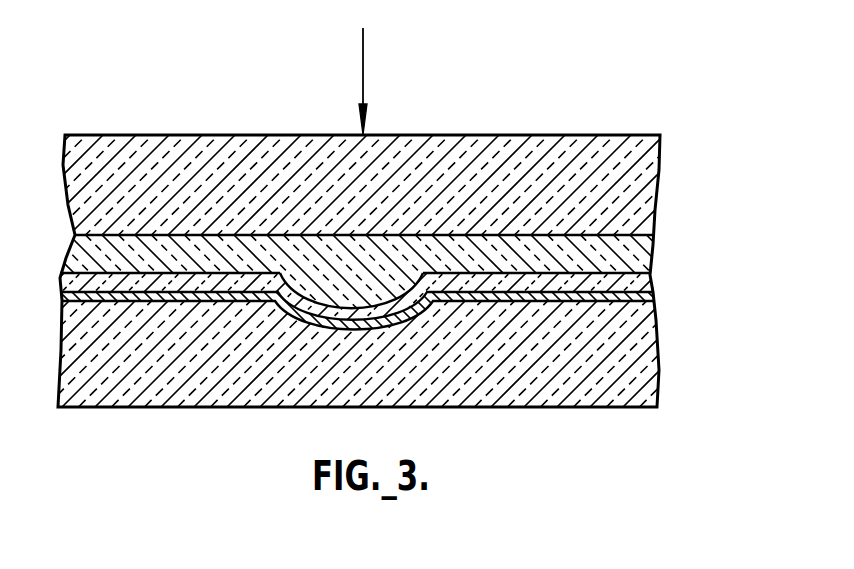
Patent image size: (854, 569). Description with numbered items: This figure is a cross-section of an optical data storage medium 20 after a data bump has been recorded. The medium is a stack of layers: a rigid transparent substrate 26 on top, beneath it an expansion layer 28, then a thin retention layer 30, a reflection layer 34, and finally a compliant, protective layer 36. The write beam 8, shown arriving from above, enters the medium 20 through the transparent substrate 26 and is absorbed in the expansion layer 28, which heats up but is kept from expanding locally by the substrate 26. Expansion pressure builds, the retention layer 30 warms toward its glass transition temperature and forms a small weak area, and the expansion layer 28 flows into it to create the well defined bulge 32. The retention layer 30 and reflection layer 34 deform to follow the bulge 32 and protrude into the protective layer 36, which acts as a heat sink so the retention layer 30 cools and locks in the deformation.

The write beam 8 is at (363, 48).
The optical data storage medium 20 is at (670, 84).
The transparent substrate 26 is at (643, 193).
The expansion layer 28 is at (632, 254).
The retention layer 30 is at (636, 286).
The bulge 32 is at (369, 285).
The reflection layer 34 is at (640, 294).
The protective layer 36 is at (643, 360).